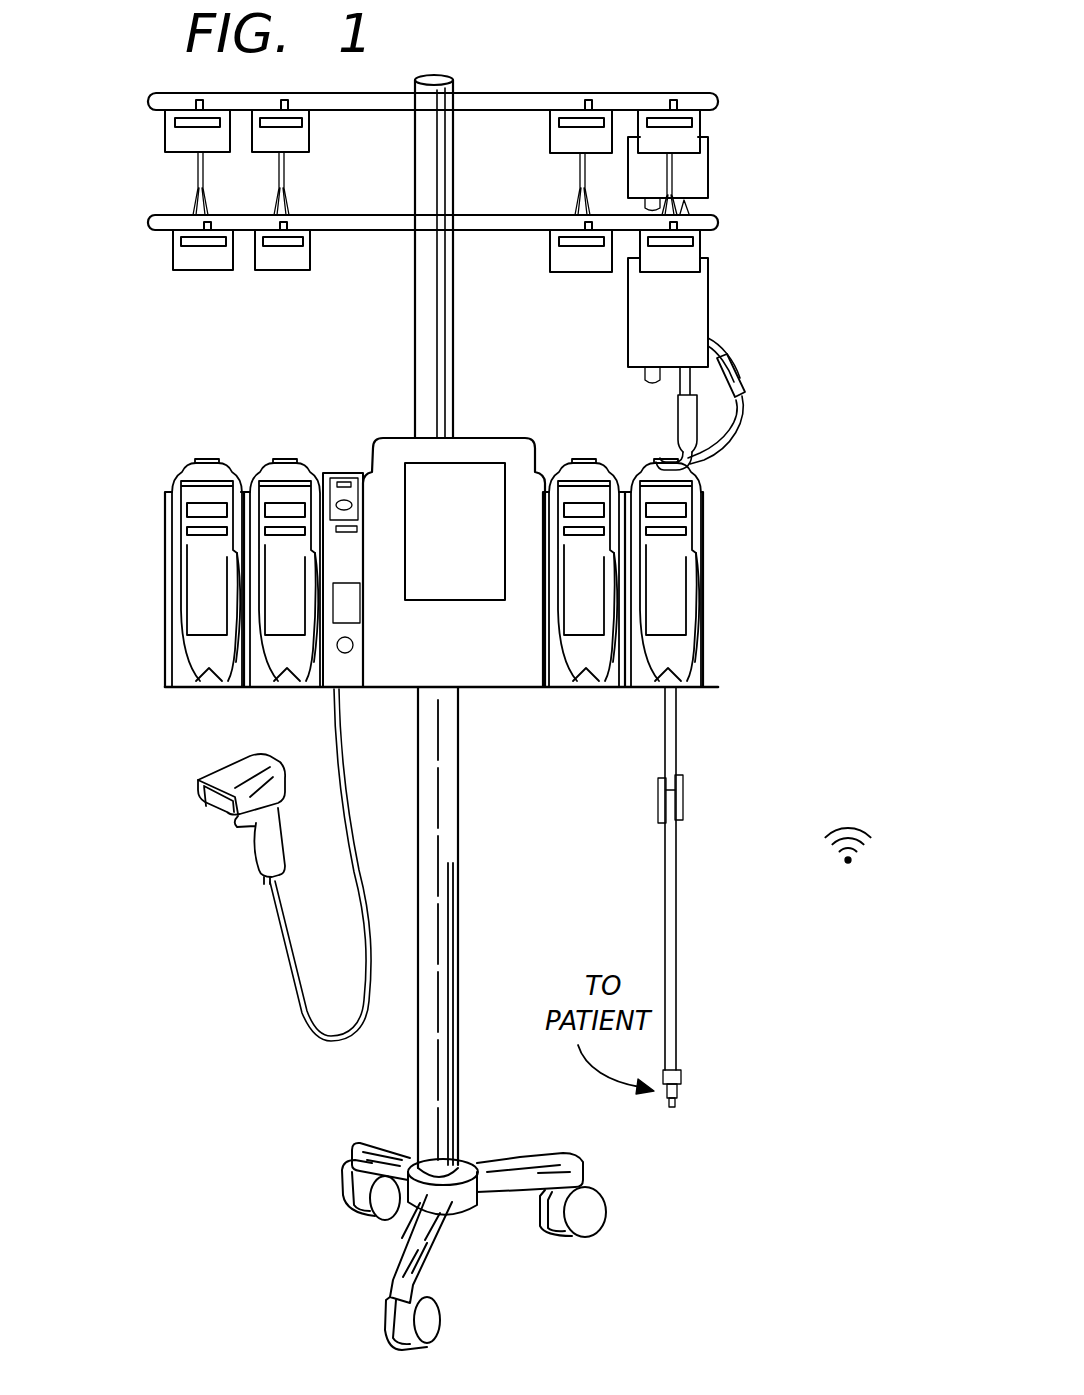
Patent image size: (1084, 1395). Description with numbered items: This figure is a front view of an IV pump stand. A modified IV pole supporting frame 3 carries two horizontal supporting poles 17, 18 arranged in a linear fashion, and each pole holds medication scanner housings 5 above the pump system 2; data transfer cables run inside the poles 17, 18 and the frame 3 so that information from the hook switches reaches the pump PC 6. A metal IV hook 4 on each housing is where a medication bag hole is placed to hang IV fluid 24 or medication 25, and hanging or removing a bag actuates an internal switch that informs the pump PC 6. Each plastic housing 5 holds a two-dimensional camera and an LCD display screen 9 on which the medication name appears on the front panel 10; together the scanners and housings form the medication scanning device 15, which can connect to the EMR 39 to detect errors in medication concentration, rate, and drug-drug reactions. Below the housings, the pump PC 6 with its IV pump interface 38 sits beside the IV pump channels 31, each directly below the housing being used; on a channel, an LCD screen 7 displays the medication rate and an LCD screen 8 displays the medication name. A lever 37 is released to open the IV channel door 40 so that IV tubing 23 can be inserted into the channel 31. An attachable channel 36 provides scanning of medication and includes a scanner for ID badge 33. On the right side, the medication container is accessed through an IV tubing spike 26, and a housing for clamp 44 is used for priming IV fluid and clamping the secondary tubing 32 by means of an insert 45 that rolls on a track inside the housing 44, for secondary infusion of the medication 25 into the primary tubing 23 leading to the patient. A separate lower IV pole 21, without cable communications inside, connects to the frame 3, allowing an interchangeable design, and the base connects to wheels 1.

The wheels 1 is at (607, 1210).
The pump system 2 is at (153, 460).
The IV pole supporting frame 3 is at (420, 183).
The IV hook 4 is at (200, 220).
The medication scanner housing 5 is at (705, 128).
The IV pump PC 6 is at (480, 642).
The LCD screen 7 is at (688, 508).
The LCD screen 8 is at (688, 530).
The LCD display screen 9 is at (178, 240).
The front panel 10 is at (200, 258).
The medication scanning device 15 is at (148, 108).
The supporting pole 17 is at (545, 93).
The supporting pole 18 is at (150, 214).
The IV pole 21 is at (460, 863).
The IV tubing 23 is at (680, 882).
The IV fluid 24 is at (710, 302).
The medication 25 is at (708, 175).
The IV tubing spike 26 is at (697, 390).
The IV pump channel 31 is at (718, 685).
The secondary tubing 32 is at (720, 445).
The scanner for ID badge 33 is at (322, 492).
The attachable channel 36 is at (330, 690).
The lever 37 is at (685, 655).
The IV pump interface 38 is at (472, 487).
The EMR 39 is at (895, 862).
The IV channel door 40 is at (690, 607).
The housing for clamp 44 is at (745, 373).
The insert 45 is at (738, 395).